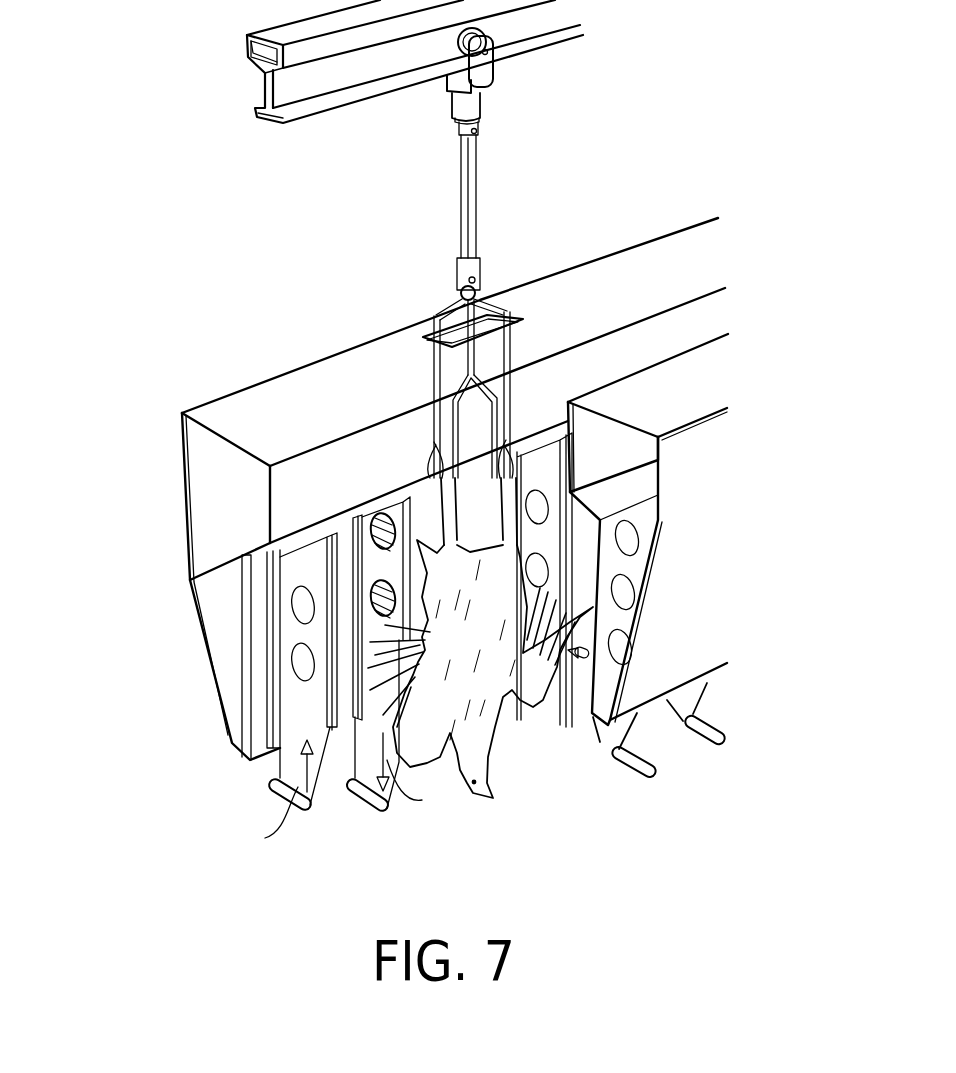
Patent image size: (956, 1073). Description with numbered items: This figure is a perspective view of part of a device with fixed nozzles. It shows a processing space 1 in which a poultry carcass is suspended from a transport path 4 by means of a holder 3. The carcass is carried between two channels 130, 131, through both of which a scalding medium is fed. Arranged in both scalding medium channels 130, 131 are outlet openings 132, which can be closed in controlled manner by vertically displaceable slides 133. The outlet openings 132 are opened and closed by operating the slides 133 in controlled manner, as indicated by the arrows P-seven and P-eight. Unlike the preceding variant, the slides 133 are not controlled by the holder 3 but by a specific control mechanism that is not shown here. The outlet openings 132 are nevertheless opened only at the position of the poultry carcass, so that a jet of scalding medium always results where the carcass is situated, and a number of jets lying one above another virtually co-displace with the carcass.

The processing space 1 is at (132, 393).
The holder 3 is at (523, 320).
The transport path 4 is at (310, 90).
The scalding medium channel 130 is at (431, 539).
The scalding medium channel 131 is at (637, 477).
The outlet openings 132 is at (390, 516).
The slides 133 is at (311, 808).